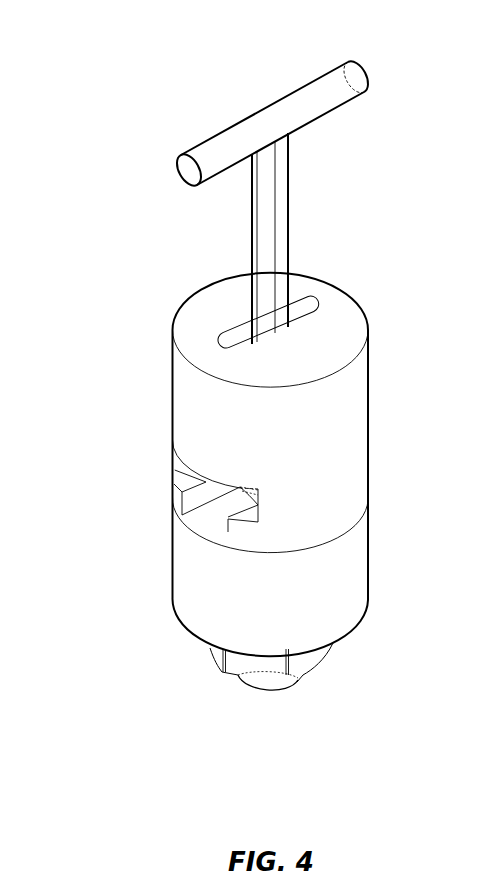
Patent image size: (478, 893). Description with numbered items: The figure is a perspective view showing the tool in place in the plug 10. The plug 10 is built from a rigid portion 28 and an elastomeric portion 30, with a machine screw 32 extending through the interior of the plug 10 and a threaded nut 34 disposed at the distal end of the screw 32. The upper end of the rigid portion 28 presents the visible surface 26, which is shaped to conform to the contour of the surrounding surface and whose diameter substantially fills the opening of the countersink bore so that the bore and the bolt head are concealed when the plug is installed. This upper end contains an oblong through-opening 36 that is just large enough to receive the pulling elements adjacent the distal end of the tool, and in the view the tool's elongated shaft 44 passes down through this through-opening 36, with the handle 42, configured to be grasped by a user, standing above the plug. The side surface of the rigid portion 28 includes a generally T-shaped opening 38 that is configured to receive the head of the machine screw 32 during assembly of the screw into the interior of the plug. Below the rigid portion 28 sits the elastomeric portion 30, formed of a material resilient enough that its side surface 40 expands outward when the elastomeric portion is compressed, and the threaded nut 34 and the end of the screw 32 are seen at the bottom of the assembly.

The plug 10 is at (110, 292).
The visible surface 26 is at (205, 318).
The rigid portion 28 is at (368, 419).
The elastomeric portion 30 is at (368, 568).
The machine screw 32 is at (297, 683).
The threaded nut 34 is at (333, 650).
The oblong through-opening 36 is at (298, 300).
The T-shaped opening 38 is at (205, 518).
The side surface 40 is at (283, 607).
The handle 42 is at (268, 104).
The elongated shaft 44 is at (290, 183).